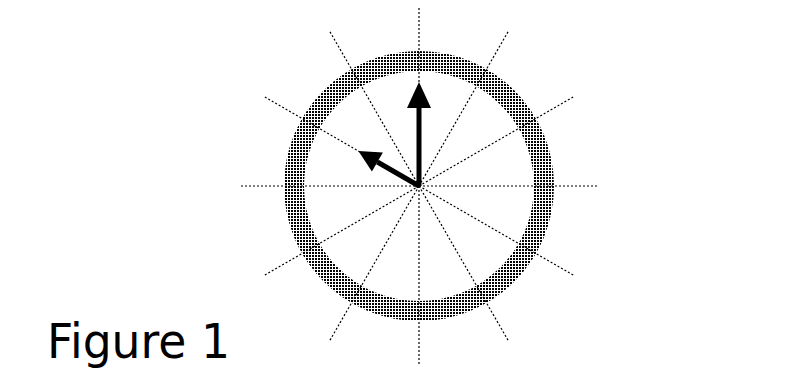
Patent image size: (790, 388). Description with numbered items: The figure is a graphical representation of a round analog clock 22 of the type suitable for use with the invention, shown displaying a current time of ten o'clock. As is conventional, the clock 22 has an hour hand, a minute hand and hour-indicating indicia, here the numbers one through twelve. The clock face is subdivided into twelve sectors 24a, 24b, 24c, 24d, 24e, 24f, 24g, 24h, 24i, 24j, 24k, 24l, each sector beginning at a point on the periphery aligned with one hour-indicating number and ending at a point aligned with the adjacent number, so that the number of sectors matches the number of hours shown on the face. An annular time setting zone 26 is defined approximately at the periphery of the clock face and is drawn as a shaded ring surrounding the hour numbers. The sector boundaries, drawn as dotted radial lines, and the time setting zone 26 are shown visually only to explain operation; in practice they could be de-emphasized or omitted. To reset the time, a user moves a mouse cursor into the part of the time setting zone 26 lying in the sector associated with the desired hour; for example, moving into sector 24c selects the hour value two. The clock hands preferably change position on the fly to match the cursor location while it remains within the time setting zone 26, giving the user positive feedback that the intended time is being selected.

The round analog clock 22 is at (622, 85).
The sector 24a is at (443, 47).
The sector 24b is at (560, 85).
The sector 24c is at (562, 158).
The sector 24d is at (555, 240).
The sector 24e is at (565, 308).
The sector 24f is at (475, 351).
The sector 24g is at (363, 351).
The sector 24h is at (280, 315).
The sector 24i is at (238, 241).
The sector 24j is at (238, 161).
The sector 24k is at (273, 78).
The sector 24l is at (390, 40).
The time setting zone 26 is at (538, 237).